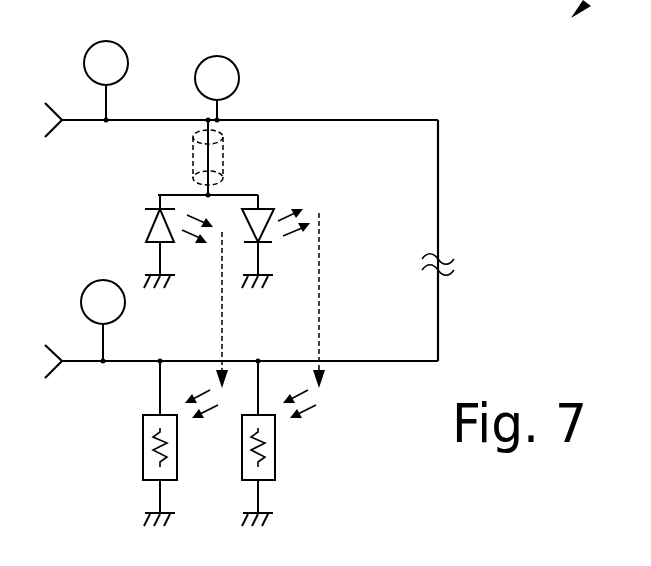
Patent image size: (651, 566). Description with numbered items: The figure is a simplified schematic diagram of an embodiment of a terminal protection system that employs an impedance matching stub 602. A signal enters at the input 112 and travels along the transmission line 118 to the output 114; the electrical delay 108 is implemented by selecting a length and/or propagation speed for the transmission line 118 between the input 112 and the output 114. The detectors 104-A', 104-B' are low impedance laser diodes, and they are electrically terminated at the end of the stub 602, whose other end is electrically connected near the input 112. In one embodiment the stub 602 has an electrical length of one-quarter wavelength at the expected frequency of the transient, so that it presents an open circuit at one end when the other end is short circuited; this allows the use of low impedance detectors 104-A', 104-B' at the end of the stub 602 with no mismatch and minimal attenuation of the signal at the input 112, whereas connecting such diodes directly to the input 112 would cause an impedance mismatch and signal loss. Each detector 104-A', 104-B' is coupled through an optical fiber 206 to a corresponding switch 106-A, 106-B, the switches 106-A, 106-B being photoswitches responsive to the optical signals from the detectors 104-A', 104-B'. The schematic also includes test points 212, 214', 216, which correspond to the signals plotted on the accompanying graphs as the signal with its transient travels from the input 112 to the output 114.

The input 112 is at (78, 118).
The output 114 is at (73, 360).
The transmission line 118 is at (414, 121).
The electrical delay 108 is at (440, 228).
The test point 212 is at (128, 62).
The test point 214' is at (262, 89).
The test point 216 is at (125, 302).
The impedance matching stub 602 is at (160, 160).
The detector 104-A' is at (123, 241).
The detector 104-B' is at (288, 218).
The optical fiber 206 is at (320, 290).
The switch 106-A is at (143, 448).
The switch 106-B is at (275, 452).